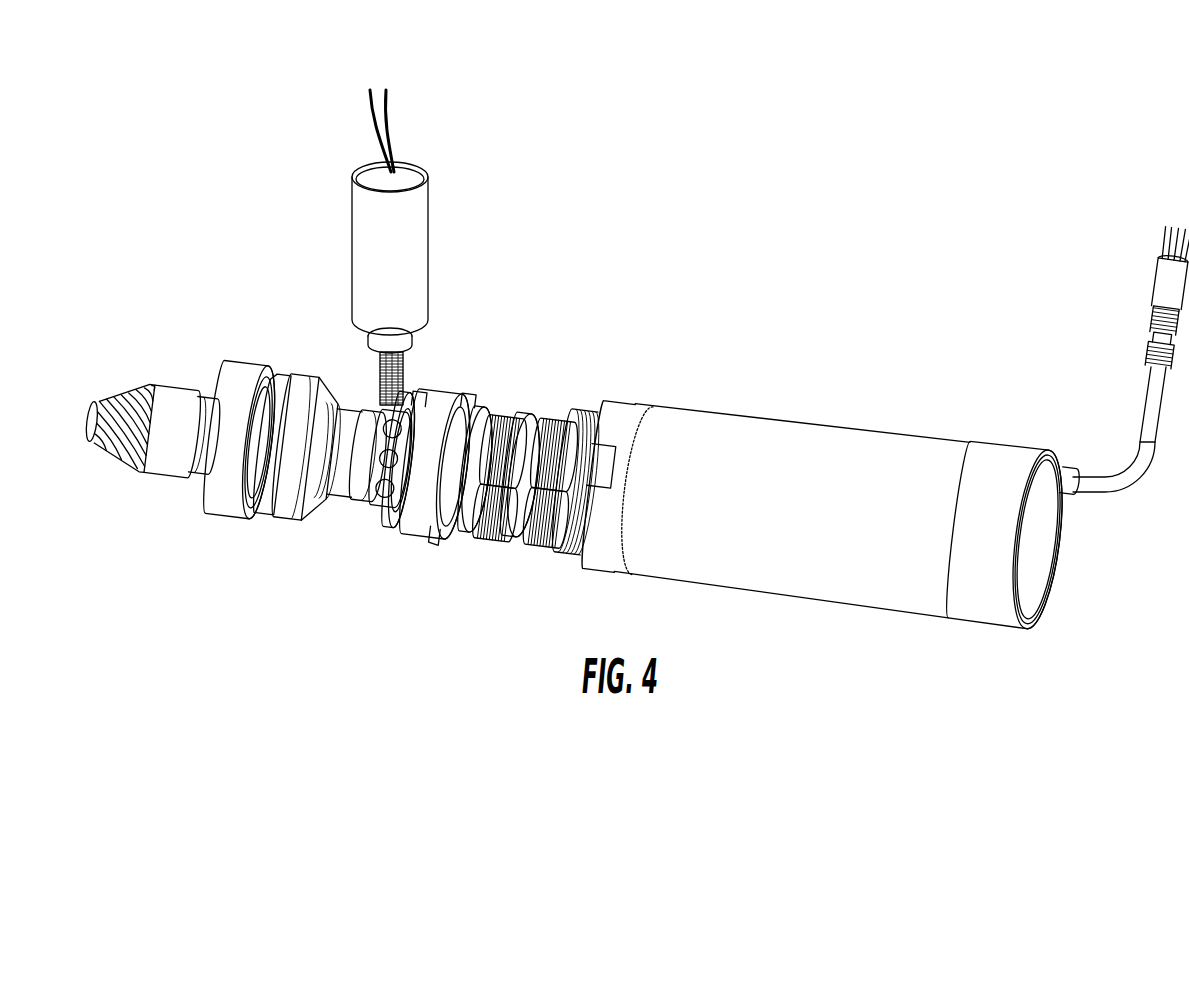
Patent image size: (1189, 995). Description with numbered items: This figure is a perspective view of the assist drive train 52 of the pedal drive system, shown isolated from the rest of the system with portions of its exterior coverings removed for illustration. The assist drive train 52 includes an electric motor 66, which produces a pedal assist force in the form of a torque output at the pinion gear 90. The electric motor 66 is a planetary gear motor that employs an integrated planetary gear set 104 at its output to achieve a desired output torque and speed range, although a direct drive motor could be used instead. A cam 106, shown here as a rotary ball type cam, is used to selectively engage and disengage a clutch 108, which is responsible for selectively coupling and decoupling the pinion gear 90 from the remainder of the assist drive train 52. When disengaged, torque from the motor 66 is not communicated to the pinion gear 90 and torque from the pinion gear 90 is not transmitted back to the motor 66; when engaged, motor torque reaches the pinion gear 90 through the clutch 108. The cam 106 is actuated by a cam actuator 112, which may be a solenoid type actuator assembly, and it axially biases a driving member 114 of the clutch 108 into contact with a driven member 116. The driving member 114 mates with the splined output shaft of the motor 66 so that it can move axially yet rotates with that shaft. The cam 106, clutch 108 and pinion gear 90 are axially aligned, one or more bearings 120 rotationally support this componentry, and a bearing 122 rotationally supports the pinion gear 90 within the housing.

The assist drive train 52 is at (328, 681).
The electric motor 66 is at (875, 447).
The pinion gear 90 is at (123, 383).
The planetary gear set 104 is at (535, 380).
The cam 106 is at (376, 532).
The clutch 108 is at (303, 352).
The cam actuator 112 is at (447, 314).
The driving member 114 is at (297, 502).
The driven member 116 is at (282, 373).
The bearings 120 is at (230, 492).
The bearing 122 is at (165, 465).